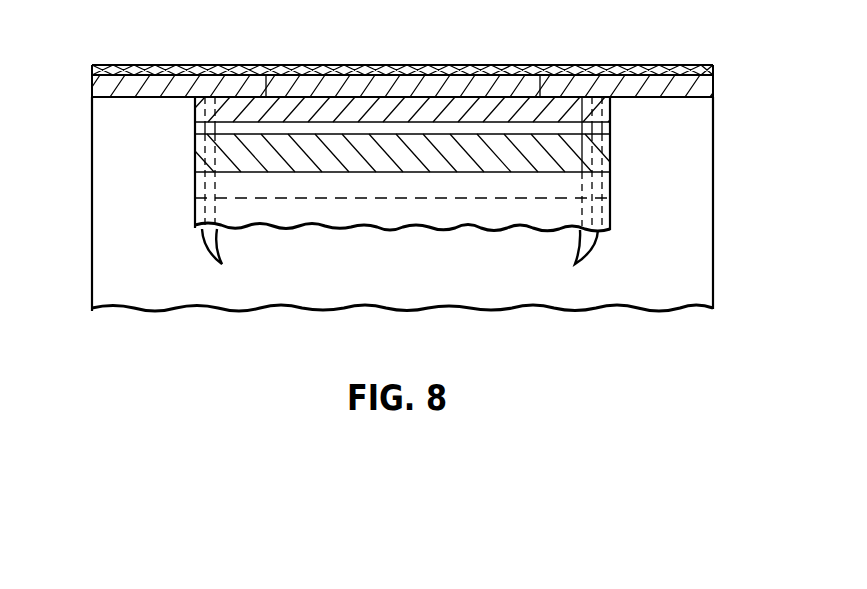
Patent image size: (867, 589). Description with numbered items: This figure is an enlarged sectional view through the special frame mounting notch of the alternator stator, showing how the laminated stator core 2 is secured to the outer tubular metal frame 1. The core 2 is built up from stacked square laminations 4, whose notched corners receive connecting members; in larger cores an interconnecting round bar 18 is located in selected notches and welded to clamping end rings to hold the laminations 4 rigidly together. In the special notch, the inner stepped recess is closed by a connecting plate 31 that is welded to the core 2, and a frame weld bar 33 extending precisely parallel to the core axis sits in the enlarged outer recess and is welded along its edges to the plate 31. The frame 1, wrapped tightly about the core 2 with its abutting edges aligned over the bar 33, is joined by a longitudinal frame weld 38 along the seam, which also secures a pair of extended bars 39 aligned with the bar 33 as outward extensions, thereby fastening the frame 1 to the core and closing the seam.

The outer tubular metal frame 1 is at (104, 258).
The stator core 2 is at (180, 195).
The lamination 4 is at (400, 261).
The interconnecting round bar 18 is at (603, 152).
The connecting plate 31 is at (195, 118).
The frame weld bar 33 is at (299, 78).
The longitudinal frame weld 38 is at (368, 68).
The extended bars 39 is at (105, 85).